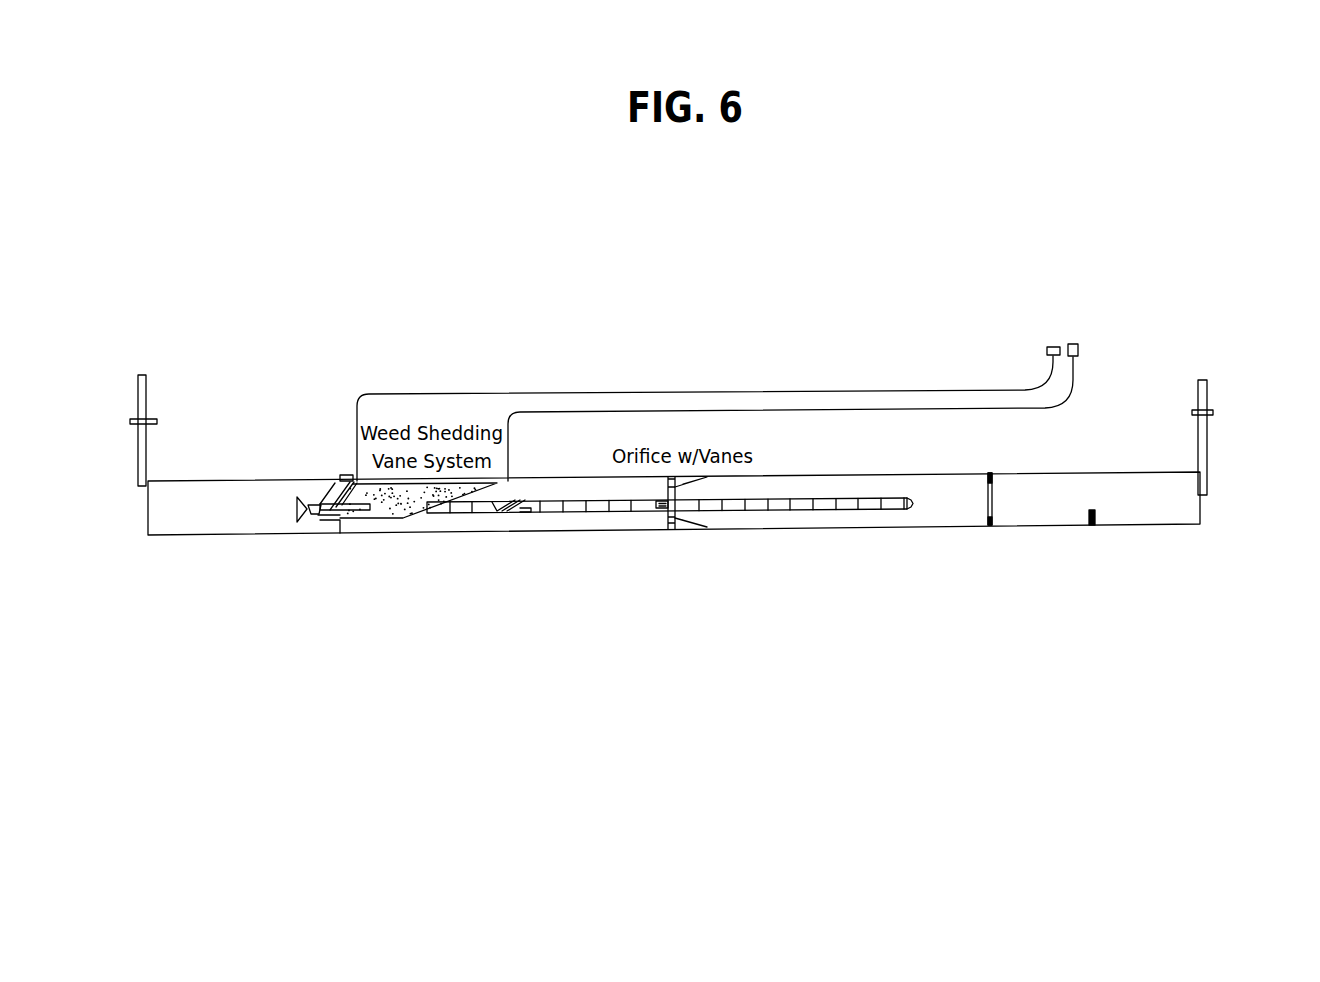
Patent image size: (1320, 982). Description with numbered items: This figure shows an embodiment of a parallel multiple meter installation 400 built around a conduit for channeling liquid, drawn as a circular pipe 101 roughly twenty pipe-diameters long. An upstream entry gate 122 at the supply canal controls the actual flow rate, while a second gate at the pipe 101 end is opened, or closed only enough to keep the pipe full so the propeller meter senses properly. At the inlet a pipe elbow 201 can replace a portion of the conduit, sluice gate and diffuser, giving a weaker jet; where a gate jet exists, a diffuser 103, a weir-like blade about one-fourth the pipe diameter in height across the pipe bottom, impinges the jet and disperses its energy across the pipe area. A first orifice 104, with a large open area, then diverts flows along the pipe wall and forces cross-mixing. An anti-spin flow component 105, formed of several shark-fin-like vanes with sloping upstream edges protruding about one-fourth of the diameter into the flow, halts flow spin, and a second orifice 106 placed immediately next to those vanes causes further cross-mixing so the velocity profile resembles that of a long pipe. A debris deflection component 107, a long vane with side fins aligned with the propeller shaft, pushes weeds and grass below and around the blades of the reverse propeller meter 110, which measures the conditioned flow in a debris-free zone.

The upstream entry gate 122 is at (145, 373).
The circular pipe 101 is at (900, 477).
The reverse propeller meter 110 is at (310, 517).
The debris deflection component 107 is at (387, 510).
The first orifice 104 is at (810, 510).
The second orifice 106 is at (667, 530).
The anti-spin flow component 105 is at (683, 482).
The pipe elbow 201 is at (910, 503).
The diffuser 103 is at (1095, 522).
The parallel multiple meter installation 400 is at (1087, 681).